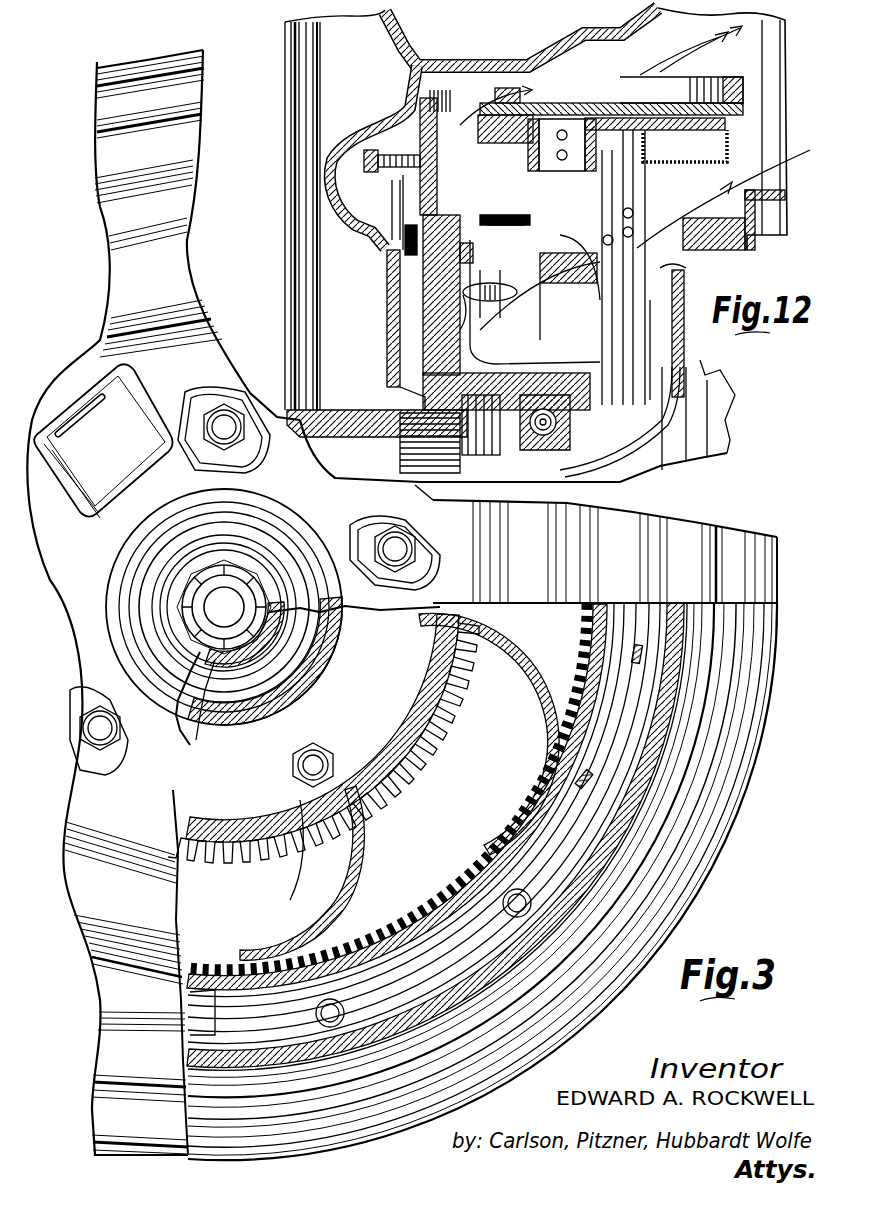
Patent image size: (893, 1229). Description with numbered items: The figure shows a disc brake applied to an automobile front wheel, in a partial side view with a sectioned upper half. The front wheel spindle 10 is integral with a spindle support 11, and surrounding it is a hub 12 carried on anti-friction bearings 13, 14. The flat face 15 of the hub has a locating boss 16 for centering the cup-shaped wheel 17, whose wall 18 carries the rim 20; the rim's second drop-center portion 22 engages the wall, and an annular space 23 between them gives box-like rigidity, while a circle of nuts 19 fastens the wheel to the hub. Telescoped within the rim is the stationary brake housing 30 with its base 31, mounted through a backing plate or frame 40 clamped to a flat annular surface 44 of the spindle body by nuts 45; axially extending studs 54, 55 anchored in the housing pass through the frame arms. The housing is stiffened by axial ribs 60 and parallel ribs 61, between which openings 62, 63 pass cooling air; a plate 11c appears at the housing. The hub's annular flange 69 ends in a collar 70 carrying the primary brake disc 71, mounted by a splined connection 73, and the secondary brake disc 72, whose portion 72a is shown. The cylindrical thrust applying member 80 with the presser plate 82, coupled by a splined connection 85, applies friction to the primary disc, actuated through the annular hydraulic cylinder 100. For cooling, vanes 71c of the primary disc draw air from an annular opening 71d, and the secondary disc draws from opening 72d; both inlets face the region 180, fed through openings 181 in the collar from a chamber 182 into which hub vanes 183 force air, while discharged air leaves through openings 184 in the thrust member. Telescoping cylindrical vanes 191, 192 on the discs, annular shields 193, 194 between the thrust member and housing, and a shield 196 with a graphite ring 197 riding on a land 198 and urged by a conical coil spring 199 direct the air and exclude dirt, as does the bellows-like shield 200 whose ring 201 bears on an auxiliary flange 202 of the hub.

In FIG. 12, the front wheel spindle 10 is at (626, 462).
In FIG. 3, the front wheel spindle 10 is at (240, 604).
In FIG. 12, the spindle support 11 is at (692, 465).
In FIG. 12, the housing plate 11c is at (611, 101).
In FIG. 3, the hub 12 is at (135, 615).
In FIG. 12, the anti-friction bearing 13 is at (350, 430).
In FIG. 12, the anti-friction bearing 14 is at (555, 469).
In FIG. 3, the anti-friction bearing 14 is at (196, 716).
In FIG. 12, the face of the hub 15 is at (410, 344).
In FIG. 12, the locating boss 16 is at (385, 420).
In FIG. 3, the locating boss 16 is at (165, 480).
In FIG. 3, the wheel 17 is at (737, 840).
In FIG. 3, the wall 18 is at (95, 890).
In FIG. 12, the nuts 19 is at (335, 210).
In FIG. 3, the nuts 19 is at (200, 440).
In FIG. 3, the rim 20 is at (318, 1150).
In FIG. 3, the second drop-center portion 22 is at (660, 685).
In FIG. 12, the annular space 23 is at (548, 50).
In FIG. 12, the stationary brake housing 30 is at (710, 77).
In FIG. 3, the stationary brake housing 30 is at (201, 1048).
In FIG. 12, the base 31 is at (740, 75).
In FIG. 3, the base 31 is at (190, 1014).
In FIG. 12, the frame or backing plate 40 is at (690, 345).
In FIG. 12, the flat annular surface 44 is at (680, 432).
In FIG. 3, the nuts 45 is at (328, 742).
In FIG. 3, the stud 54 is at (340, 1030).
In FIG. 3, the stud 55 is at (575, 896).
In FIG. 3, the ribs 60 is at (595, 870).
In FIG. 12, the parallel ribs 61 is at (445, 90).
In FIG. 3, the parallel ribs 61 is at (645, 718).
In FIG. 12, the opening 62 is at (552, 104).
In FIG. 3, the opening 62 is at (630, 637).
In FIG. 12, the opening 63 is at (505, 115).
In FIG. 12, the annular flange 69 is at (440, 314).
In FIG. 3, the collar 70 is at (222, 822).
In FIG. 12, the primary brake disc 71 is at (568, 277).
In FIG. 3, the primary brake disc 71 is at (385, 805).
In FIG. 3, the vanes 71c is at (345, 878).
In FIG. 12, the annular opening 71d is at (625, 235).
In FIG. 12, the secondary brake disc 72 is at (420, 118).
In FIG. 12, the sleeve portion 72a is at (459, 219).
In FIG. 12, the annular opening 72d is at (408, 282).
In FIG. 12, the splined connection 73 is at (557, 311).
In FIG. 3, the splined connection 73 is at (435, 760).
In FIG. 12, the thrust applying member 80 is at (725, 124).
In FIG. 3, the thrust applying member 80 is at (262, 1000).
In FIG. 12, the presser plate 82 is at (623, 267).
In FIG. 3, the splined connection 85 is at (293, 1000).
In FIG. 12, the annular cylinder 100 is at (716, 262).
In FIG. 12, the region 180 is at (486, 286).
In FIG. 12, the openings 181 is at (488, 302).
In FIG. 12, the annular recess or chamber 182 is at (508, 300).
In FIG. 12, the vane 183 is at (575, 354).
In FIG. 12, the openings 184 is at (541, 102).
In FIG. 3, the openings 184 is at (345, 965).
In FIG. 12, the cylindrical vane 191 is at (508, 229).
In FIG. 12, the cylindrical vane 192 is at (509, 242).
In FIG. 12, the annular shield 193 is at (663, 158).
In FIG. 12, the annular shield 194 is at (676, 166).
In FIG. 12, the shield 196 is at (680, 272).
In FIG. 12, the ring 197 is at (540, 297).
In FIG. 12, the annular land 198 is at (610, 300).
In FIG. 12, the coil spring 199 is at (625, 360).
In FIG. 12, the shield 200 is at (400, 230).
In FIG. 12, the ring 201 is at (400, 265).
In FIG. 12, the auxiliary flange 202 is at (420, 285).